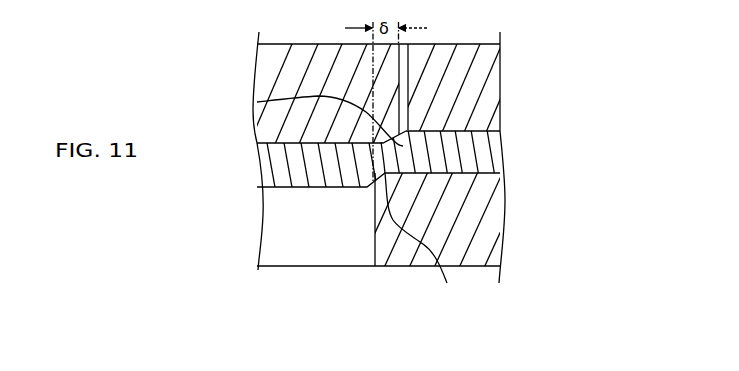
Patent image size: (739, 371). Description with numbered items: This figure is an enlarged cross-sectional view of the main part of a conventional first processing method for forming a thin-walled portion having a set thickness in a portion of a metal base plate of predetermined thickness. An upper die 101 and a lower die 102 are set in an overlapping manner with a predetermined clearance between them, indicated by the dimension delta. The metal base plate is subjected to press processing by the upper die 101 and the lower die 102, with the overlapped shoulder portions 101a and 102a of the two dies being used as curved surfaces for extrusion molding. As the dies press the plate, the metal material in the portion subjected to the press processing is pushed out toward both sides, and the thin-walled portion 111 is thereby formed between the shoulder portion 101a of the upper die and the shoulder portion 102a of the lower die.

The upper die 101 is at (265, 70).
The shoulder portion of upper die 101a is at (257, 102).
The lower die 102 is at (481, 233).
The shoulder portion of lower die 102a is at (432, 228).
The thin-walled portion 111 is at (387, 157).